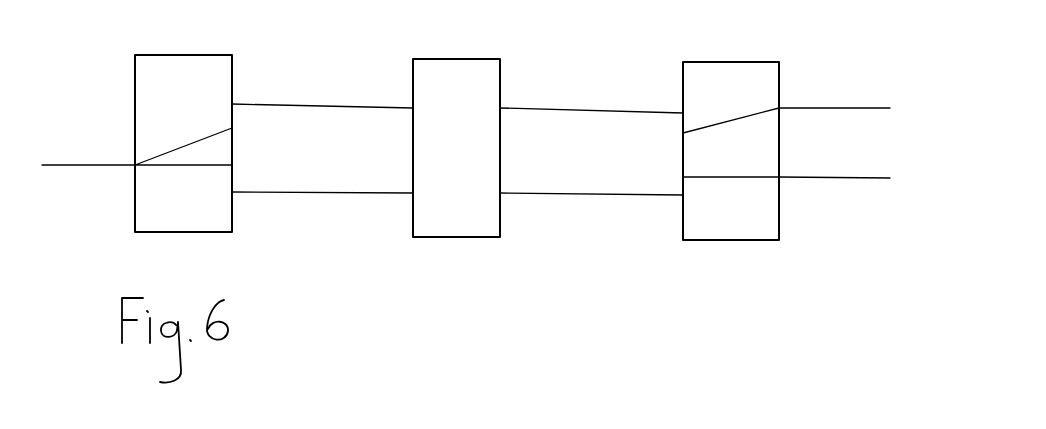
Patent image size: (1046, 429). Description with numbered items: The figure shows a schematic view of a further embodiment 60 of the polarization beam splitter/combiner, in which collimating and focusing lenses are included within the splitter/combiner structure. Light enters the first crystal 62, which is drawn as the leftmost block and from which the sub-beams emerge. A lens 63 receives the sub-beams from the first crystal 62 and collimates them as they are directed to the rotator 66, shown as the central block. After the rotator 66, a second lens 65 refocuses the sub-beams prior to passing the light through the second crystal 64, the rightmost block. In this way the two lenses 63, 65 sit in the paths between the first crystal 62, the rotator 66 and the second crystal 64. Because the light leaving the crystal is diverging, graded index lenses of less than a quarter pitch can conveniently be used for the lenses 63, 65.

The further embodiment 60 is at (399, 290).
The first crystal 62 is at (205, 220).
The lens 63 is at (334, 181).
The second crystal 64 is at (750, 230).
The lens 65 is at (597, 182).
The rotator 66 is at (480, 228).